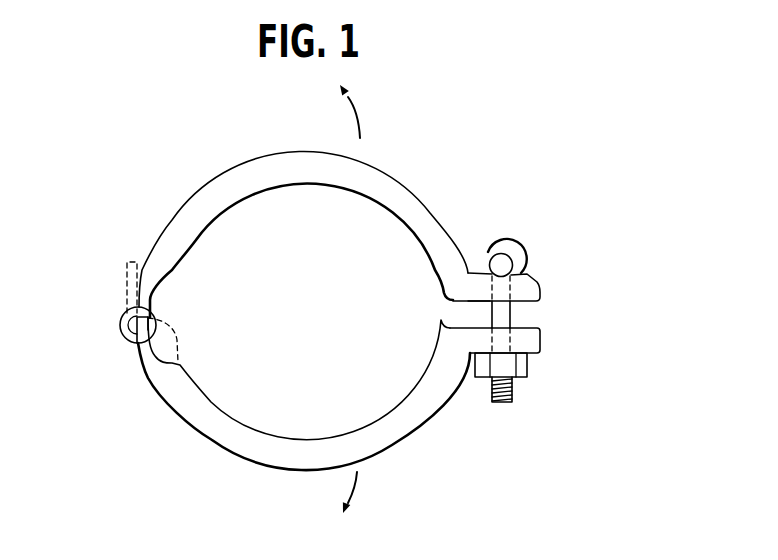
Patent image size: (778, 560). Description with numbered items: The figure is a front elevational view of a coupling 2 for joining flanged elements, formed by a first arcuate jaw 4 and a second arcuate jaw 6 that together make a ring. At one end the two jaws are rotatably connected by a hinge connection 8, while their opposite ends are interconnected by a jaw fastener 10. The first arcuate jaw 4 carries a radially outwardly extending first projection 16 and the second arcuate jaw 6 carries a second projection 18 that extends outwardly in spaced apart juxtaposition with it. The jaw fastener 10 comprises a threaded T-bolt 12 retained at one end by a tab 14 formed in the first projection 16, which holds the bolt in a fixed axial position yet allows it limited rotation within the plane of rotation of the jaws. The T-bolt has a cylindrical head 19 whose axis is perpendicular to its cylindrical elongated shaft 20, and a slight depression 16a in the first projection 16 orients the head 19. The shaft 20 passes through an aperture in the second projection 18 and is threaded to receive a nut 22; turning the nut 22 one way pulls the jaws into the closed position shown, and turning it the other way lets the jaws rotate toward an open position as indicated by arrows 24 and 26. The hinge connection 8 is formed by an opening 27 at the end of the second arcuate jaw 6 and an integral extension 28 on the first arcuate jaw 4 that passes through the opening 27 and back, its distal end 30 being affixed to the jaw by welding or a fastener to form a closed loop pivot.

The coupling 2 is at (320, 304).
The first arcuate jaw 4 is at (333, 170).
The second arcuate jaw 6 is at (231, 432).
The hinge connection 8 is at (109, 311).
The jaw fastener 10 is at (502, 327).
The T-bolt 12 is at (546, 327).
The tab 14 is at (523, 258).
The first projection 16 is at (502, 278).
The depression 16a is at (495, 278).
The second projection 18 is at (532, 343).
The head 19 is at (490, 250).
The elongated shaft 20 is at (493, 403).
The nut 22 is at (520, 364).
The arrow 24 is at (350, 118).
The arrow 26 is at (347, 483).
The opening 27 is at (138, 349).
The extension 28 is at (122, 328).
The distal end 30 is at (125, 264).